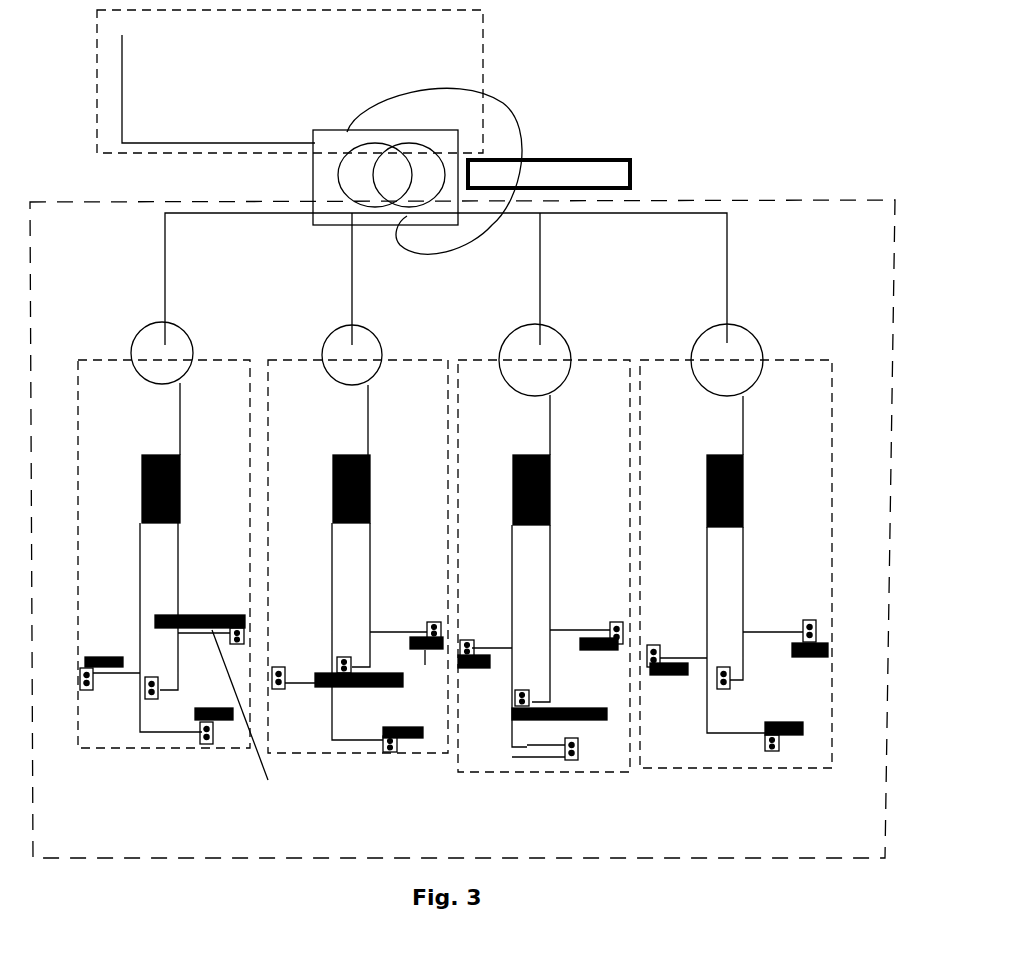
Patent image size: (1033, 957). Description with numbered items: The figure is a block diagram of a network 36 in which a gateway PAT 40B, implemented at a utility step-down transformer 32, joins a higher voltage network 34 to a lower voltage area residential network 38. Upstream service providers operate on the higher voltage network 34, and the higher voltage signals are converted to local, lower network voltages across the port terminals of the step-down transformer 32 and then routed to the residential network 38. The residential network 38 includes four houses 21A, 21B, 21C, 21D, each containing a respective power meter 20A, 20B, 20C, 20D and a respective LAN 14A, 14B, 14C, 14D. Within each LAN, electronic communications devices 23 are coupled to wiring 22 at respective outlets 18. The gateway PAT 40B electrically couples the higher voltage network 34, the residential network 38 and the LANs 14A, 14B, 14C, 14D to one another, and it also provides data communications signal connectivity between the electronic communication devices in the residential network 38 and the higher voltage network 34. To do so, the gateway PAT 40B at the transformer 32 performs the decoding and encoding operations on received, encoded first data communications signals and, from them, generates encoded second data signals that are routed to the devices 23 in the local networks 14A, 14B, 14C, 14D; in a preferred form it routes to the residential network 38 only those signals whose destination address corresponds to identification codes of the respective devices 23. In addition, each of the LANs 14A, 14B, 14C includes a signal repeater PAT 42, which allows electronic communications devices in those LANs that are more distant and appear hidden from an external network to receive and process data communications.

The higher voltage network 34 is at (486, 48).
The network 36 is at (656, 52).
The step-down transformer 32 is at (467, 148).
The gateway PAT 40B is at (553, 160).
The area residential network 38 is at (684, 200).
The power meter 20A is at (193, 345).
The power meter 20B is at (325, 343).
The power meter 20C is at (560, 337).
The power meter 20D is at (700, 337).
The house 21A is at (228, 405).
The house 21B is at (412, 405).
The house 21C is at (600, 423).
The house 21D is at (790, 428).
The LAN 14A is at (187, 453).
The LAN 14B is at (378, 454).
The LAN 14C is at (559, 460).
The LAN 14D is at (753, 461).
The wiring 22 is at (138, 595).
The signal repeater PAT 42 is at (187, 612).
The electronic communications devices 23 is at (110, 657).
The outlets 18 is at (93, 693).